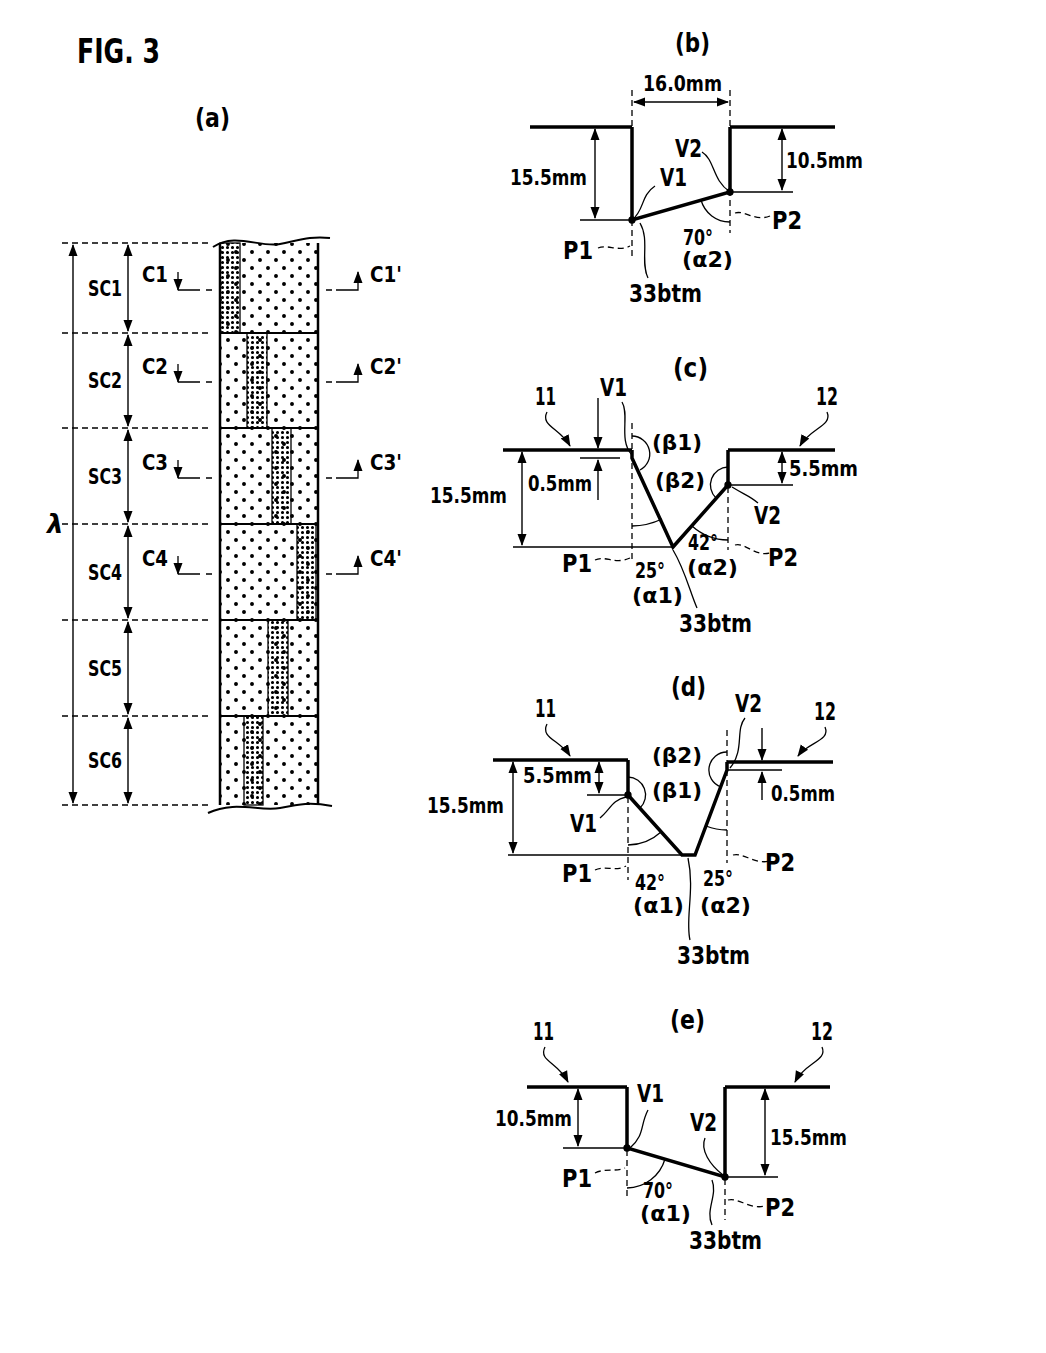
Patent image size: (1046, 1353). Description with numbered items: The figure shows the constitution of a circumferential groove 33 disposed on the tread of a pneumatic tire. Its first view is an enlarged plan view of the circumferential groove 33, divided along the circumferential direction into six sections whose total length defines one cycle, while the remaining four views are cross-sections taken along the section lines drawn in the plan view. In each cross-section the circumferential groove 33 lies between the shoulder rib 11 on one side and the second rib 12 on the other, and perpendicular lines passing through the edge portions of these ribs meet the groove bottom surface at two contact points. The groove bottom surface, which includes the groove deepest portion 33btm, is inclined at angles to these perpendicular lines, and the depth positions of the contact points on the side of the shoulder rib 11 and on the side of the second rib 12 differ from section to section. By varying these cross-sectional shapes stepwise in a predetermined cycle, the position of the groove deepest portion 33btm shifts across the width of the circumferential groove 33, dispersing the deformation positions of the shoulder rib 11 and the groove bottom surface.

The circumferential groove 33 is at (273, 220).
The groove deepest portion 33btm is at (236, 318).
The shoulder rib 11 is at (580, 124).
The second rib 12 is at (795, 124).